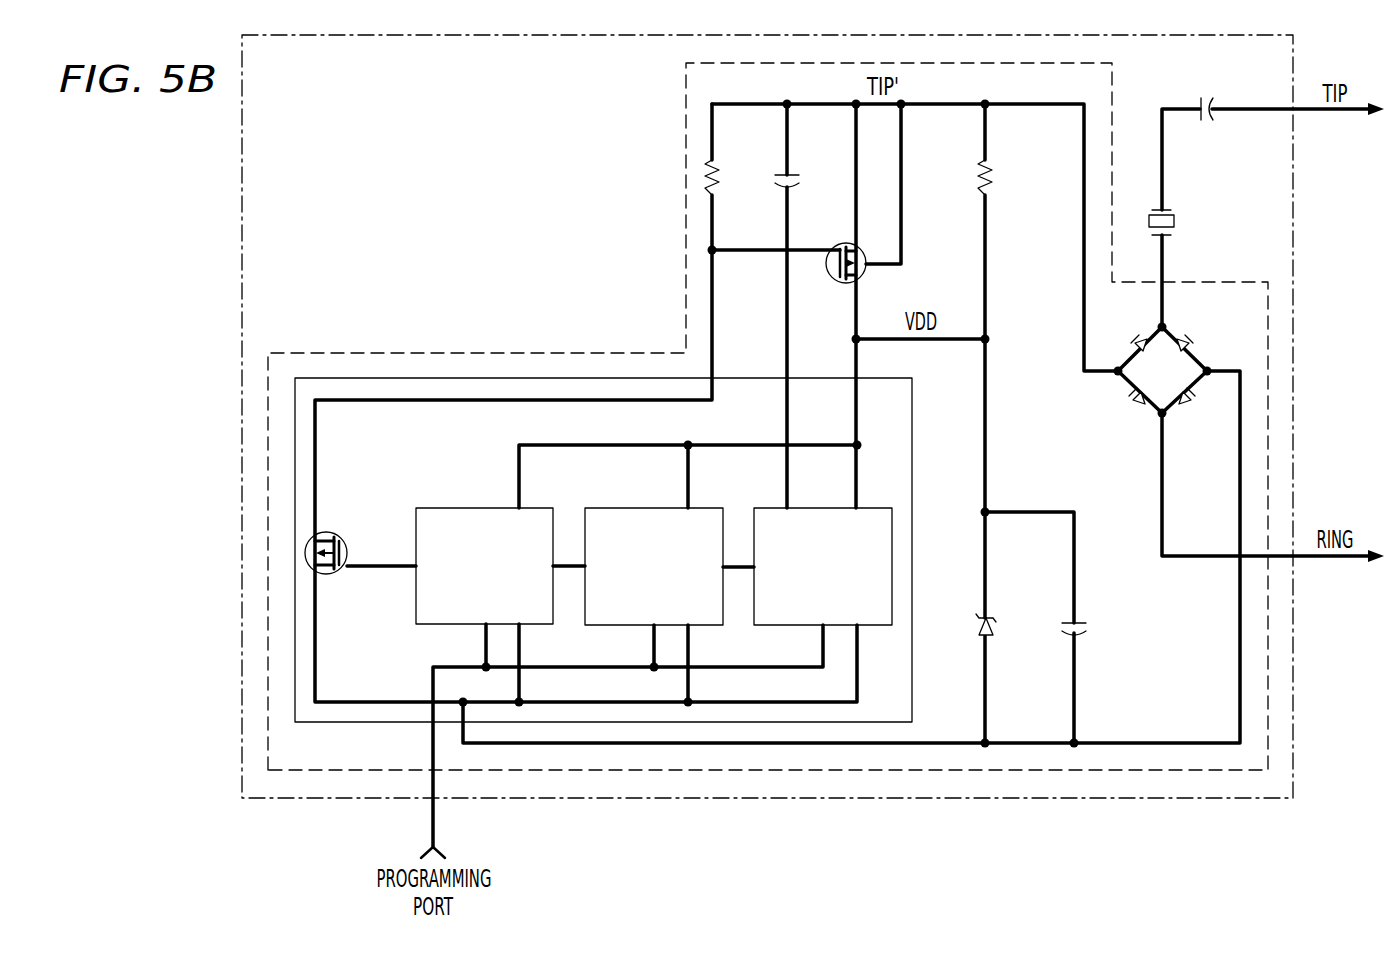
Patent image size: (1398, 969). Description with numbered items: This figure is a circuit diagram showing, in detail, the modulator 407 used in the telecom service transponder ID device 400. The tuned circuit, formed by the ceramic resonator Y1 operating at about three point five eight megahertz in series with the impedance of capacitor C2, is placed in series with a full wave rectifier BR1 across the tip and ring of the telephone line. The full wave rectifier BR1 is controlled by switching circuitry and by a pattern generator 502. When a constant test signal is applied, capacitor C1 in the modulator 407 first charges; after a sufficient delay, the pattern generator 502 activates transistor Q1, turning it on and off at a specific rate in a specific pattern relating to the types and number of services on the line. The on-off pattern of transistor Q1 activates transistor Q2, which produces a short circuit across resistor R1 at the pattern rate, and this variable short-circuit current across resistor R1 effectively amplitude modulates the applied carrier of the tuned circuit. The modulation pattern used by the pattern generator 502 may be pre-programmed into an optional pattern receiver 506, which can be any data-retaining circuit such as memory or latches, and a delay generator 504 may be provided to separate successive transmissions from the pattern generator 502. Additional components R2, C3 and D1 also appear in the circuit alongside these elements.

The telecom service transponder ID device 400 is at (870, 799).
The modulator 407 is at (495, 350).
The pattern generator 502 is at (471, 505).
The delay generator 504 is at (639, 506).
The pattern receiver 506 is at (822, 506).
The resistor R1 is at (992, 183).
The resistor R2 is at (719, 178).
The capacitor C1 is at (1088, 633).
The capacitor C2 is at (1206, 98).
The capacitor C3 is at (800, 185).
The transistor Q1 is at (838, 283).
The transistor Q2 is at (338, 535).
The resonator Y1 is at (1174, 221).
The zener diode D1 is at (993, 629).
The full wave rectifier BR1 is at (1147, 380).